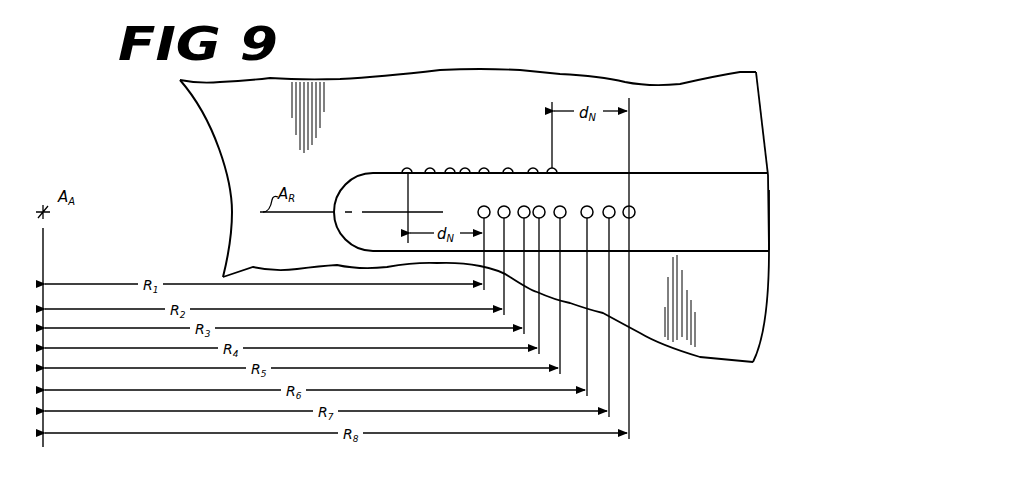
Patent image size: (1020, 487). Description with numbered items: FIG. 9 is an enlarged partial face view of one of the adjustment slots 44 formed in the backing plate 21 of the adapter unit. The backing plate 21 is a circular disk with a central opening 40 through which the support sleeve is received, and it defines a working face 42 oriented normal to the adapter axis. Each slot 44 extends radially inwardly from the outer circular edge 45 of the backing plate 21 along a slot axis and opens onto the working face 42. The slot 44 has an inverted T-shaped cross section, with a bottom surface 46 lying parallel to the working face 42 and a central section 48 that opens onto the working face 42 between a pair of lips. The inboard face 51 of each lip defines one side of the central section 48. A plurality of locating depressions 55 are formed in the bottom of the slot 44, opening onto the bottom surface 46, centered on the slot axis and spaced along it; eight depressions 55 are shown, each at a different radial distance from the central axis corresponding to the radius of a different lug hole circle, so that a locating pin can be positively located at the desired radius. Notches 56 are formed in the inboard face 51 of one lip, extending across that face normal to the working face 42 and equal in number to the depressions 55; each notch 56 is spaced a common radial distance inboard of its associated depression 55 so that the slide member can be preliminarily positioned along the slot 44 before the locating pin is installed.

The backing plate 21 is at (758, 71).
The central opening 40 is at (491, 203).
The working face 42 is at (700, 83).
The slot 44 is at (770, 187).
The outer circular edge 45 is at (766, 110).
The bottom surface 46 is at (765, 215).
The central section 48 is at (706, 252).
The inboard face 51 is at (723, 175).
The locating depressions 55 is at (665, 196).
The notches 56 is at (567, 154).